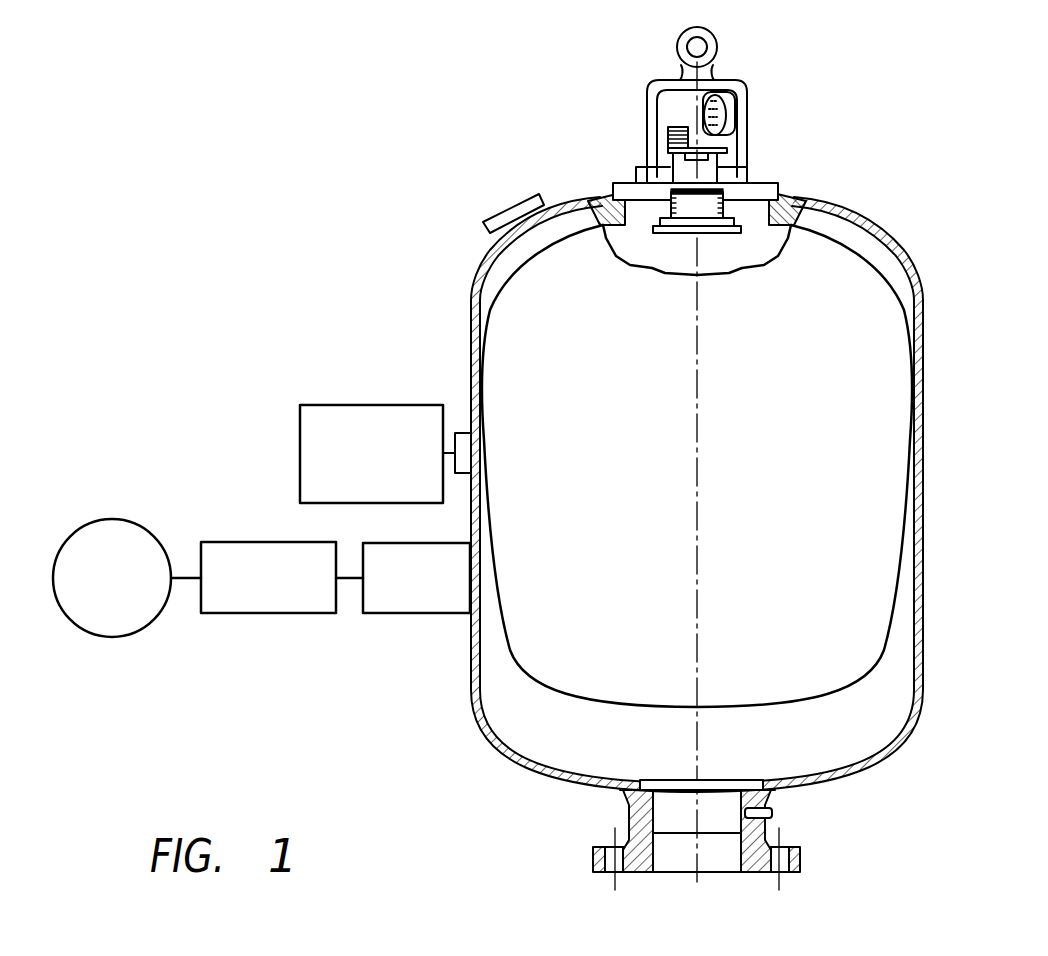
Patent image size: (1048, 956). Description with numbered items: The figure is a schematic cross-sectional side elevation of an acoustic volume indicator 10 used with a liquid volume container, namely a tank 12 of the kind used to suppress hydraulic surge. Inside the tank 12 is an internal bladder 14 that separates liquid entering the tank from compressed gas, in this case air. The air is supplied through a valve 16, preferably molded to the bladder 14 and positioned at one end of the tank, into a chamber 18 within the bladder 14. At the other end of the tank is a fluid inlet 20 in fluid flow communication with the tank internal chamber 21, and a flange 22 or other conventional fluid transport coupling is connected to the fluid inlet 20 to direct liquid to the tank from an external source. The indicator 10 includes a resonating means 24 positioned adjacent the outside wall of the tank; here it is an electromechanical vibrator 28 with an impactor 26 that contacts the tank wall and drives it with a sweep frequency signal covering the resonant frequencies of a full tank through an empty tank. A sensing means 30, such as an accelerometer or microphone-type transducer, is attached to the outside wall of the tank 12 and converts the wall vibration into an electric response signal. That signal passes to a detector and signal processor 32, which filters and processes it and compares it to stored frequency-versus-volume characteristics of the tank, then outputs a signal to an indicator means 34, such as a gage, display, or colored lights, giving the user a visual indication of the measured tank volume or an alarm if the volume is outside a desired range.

The acoustic volume indicator 10 is at (190, 412).
The tank 12 is at (923, 500).
The internal bladder 14 is at (900, 272).
The valve 16 is at (672, 125).
The chamber 18 is at (578, 320).
The fluid inlet 20 is at (635, 818).
The tank internal chamber 21 is at (878, 717).
The flange 22 is at (752, 862).
The resonating means 24 is at (338, 378).
The impactor 26 is at (467, 433).
The electromechanical vibrator 28 is at (378, 405).
The sensing means 30 is at (418, 613).
The signal processor 32 is at (268, 613).
The indicator means 34 is at (112, 637).